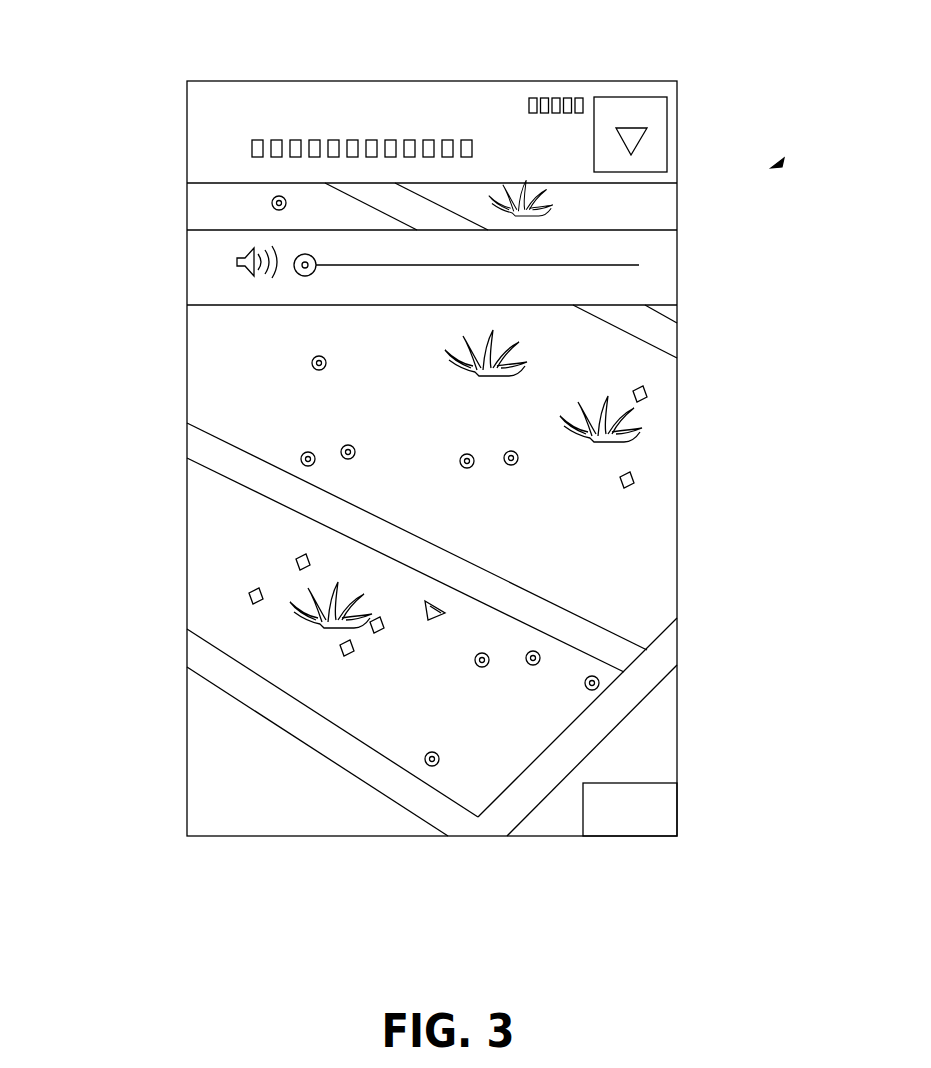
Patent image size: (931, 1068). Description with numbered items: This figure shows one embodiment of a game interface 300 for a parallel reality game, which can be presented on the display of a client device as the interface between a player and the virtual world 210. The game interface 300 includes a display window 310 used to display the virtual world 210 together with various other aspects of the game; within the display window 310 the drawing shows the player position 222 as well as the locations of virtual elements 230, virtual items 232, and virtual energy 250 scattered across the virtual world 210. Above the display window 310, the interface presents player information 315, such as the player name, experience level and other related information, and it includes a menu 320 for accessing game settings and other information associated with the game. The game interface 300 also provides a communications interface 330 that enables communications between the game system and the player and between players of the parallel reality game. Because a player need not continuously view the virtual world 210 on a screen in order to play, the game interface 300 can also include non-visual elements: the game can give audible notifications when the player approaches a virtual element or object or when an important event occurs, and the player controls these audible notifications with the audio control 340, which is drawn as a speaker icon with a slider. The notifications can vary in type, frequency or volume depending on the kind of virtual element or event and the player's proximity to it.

The game interface 300 is at (445, 34).
The player information 315 is at (198, 101).
The menu 320 is at (658, 135).
The display window 310 is at (668, 215).
The audio control 340 is at (200, 250).
The virtual world 210 is at (668, 540).
The virtual element 230 is at (447, 350).
The virtual item 232 is at (297, 558).
The virtual energy 250 is at (326, 368).
The player position 222 is at (426, 608).
The communications interface 330 is at (672, 813).